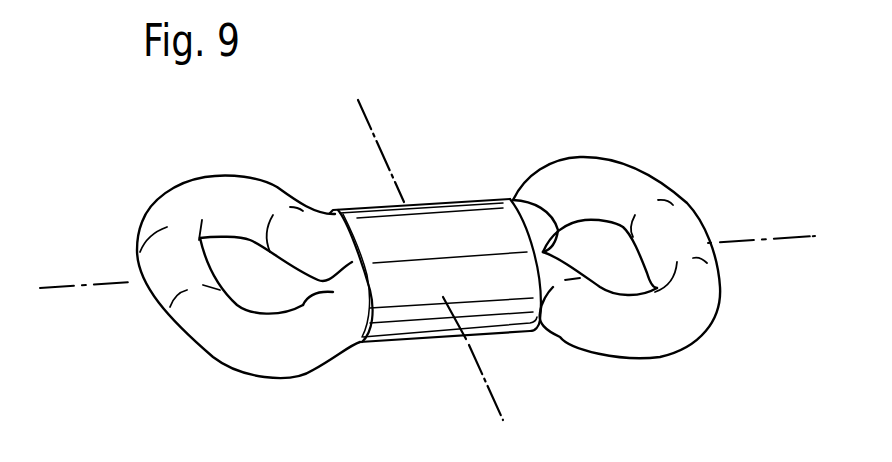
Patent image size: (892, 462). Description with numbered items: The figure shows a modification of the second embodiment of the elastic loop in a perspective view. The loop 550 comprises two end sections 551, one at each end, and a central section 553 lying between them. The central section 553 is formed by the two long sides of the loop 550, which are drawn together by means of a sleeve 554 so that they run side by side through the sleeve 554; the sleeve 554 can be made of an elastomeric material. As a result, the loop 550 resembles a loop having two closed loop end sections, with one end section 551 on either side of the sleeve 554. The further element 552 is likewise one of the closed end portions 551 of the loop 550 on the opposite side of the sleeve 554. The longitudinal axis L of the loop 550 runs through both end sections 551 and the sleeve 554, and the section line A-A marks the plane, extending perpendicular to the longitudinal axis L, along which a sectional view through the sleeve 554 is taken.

The loop 550 is at (484, 172).
The end sections 551 is at (645, 192).
The second chain link 552 is at (190, 200).
The central section 553 is at (415, 342).
The sleeve 554 is at (373, 225).
The section line A- A is at (433, 264).
The longitudinal axis L is at (780, 238).